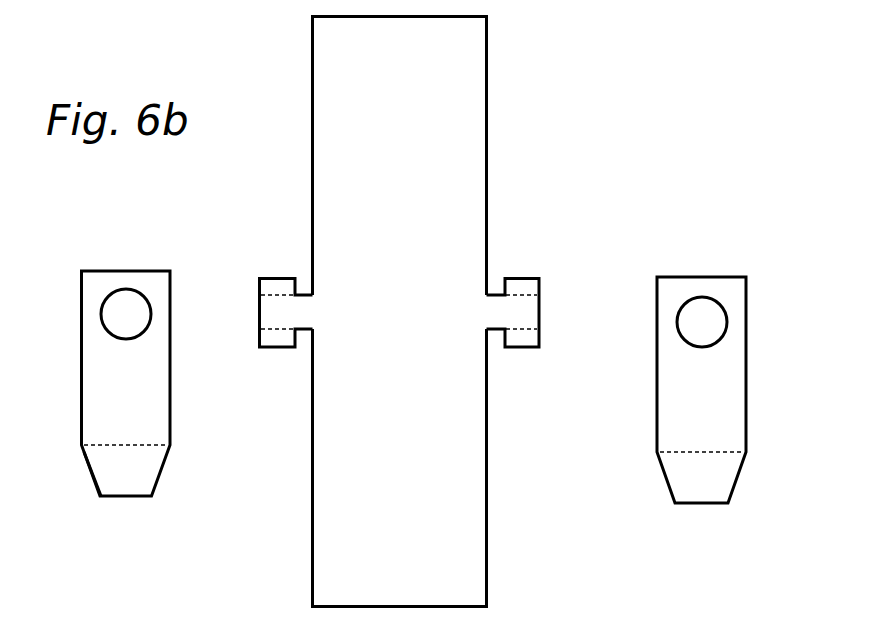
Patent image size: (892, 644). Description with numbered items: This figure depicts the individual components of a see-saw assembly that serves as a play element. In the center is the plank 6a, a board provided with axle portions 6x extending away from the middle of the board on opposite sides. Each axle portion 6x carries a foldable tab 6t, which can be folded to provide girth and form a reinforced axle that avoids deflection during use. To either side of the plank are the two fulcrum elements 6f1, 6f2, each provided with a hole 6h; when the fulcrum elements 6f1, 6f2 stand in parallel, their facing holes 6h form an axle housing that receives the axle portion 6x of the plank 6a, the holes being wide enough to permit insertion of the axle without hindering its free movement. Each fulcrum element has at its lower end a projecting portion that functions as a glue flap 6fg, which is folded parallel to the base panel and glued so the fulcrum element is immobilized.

The plank 6a is at (373, 312).
The foldable tab 6t is at (523, 273).
The axle portion 6x is at (488, 313).
The fulcrum element 6f1 is at (126, 383).
The fulcrum element 6f2 is at (701, 390).
The hole 6h is at (110, 320).
The glue flap 6fg is at (100, 468).